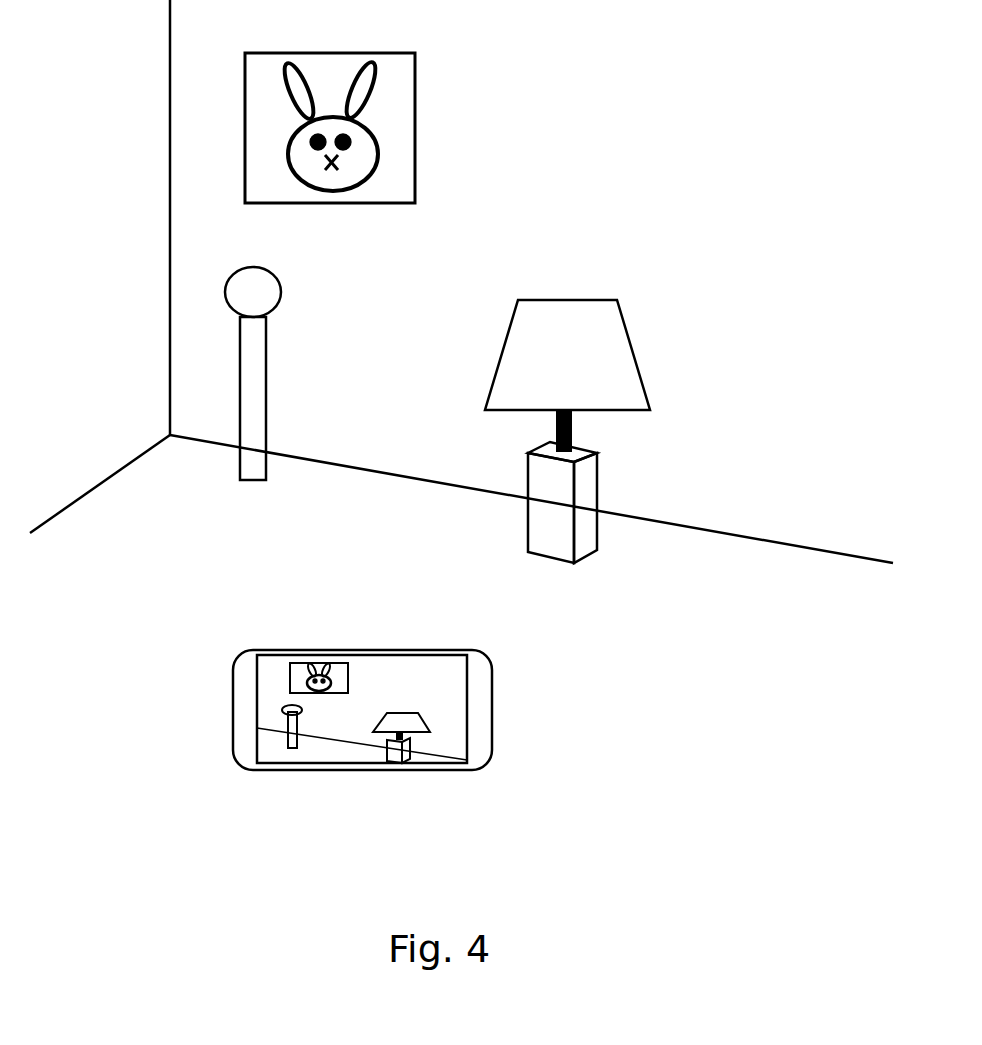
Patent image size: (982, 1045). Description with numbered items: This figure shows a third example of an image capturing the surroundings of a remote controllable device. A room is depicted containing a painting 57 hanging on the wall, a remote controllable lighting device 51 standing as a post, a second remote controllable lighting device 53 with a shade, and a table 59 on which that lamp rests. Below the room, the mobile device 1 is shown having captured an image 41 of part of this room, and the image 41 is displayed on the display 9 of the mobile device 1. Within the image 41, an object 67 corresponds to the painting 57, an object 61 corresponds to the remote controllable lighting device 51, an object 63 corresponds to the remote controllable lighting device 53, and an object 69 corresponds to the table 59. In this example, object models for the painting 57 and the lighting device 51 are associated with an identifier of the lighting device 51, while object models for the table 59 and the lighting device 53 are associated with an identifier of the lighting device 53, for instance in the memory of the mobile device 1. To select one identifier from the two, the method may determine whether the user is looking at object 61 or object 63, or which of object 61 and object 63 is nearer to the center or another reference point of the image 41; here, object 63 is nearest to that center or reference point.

The mobile device 1 is at (485, 652).
The display 9 is at (467, 743).
The image 41 is at (460, 681).
The remote controllable lighting device 51 is at (275, 275).
The remote controllable lighting device 53 is at (637, 370).
The painting 57 is at (415, 118).
The table 59 is at (597, 488).
The object 61 is at (292, 748).
The object 63 is at (398, 713).
The object 67 is at (308, 660).
The object 69 is at (407, 763).